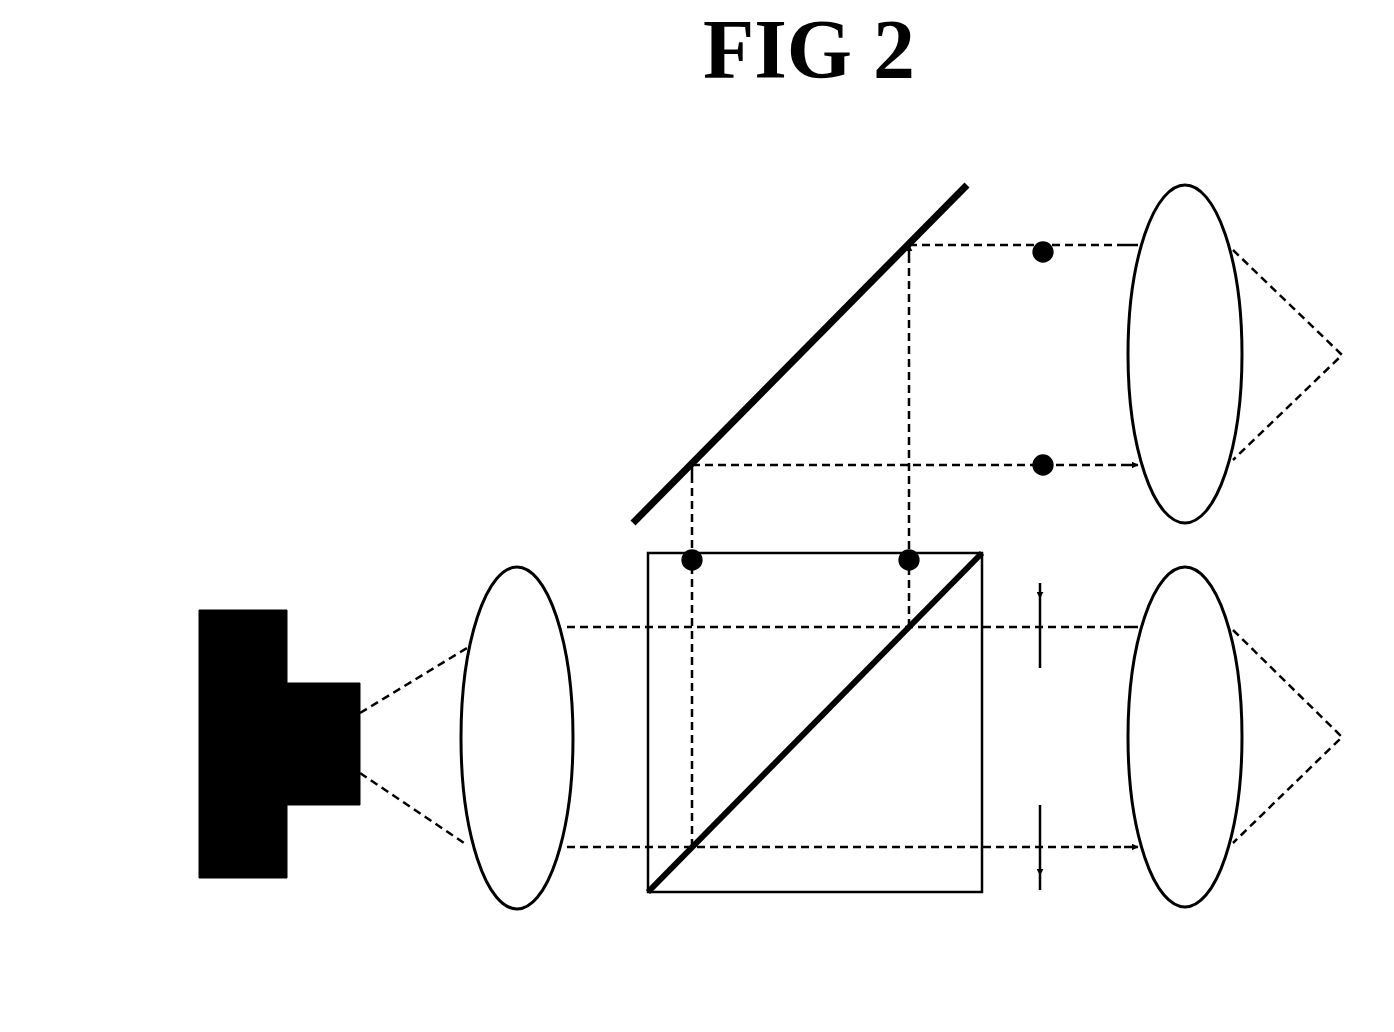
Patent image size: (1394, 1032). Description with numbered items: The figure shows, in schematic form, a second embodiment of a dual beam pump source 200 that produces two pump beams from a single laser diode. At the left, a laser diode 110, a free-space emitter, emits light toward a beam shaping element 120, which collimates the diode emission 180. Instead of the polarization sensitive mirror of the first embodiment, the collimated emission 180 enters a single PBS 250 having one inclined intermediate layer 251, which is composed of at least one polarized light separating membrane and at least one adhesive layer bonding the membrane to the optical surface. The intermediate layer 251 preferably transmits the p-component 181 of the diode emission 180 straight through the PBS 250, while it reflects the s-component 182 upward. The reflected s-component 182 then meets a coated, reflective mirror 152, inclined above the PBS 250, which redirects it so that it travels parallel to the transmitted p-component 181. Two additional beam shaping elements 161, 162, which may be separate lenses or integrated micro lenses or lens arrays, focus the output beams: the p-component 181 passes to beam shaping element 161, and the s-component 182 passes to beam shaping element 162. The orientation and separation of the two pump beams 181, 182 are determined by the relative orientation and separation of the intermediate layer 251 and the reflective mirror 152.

The dual beam pump source 200 is at (770, 547).
The laser diode 110 is at (279, 744).
The beam shaping element 120 is at (466, 738).
The diode emission 180 is at (852, 736).
The PBS 250 is at (815, 722).
The inclined intermediate layer 251 is at (815, 722).
The coated mirror 152 is at (800, 354).
The s-component 182 is at (1012, 544).
The p-component 181 is at (1170, 736).
The beam shaping element 162 is at (1185, 354).
The beam shaping element 161 is at (1185, 737).